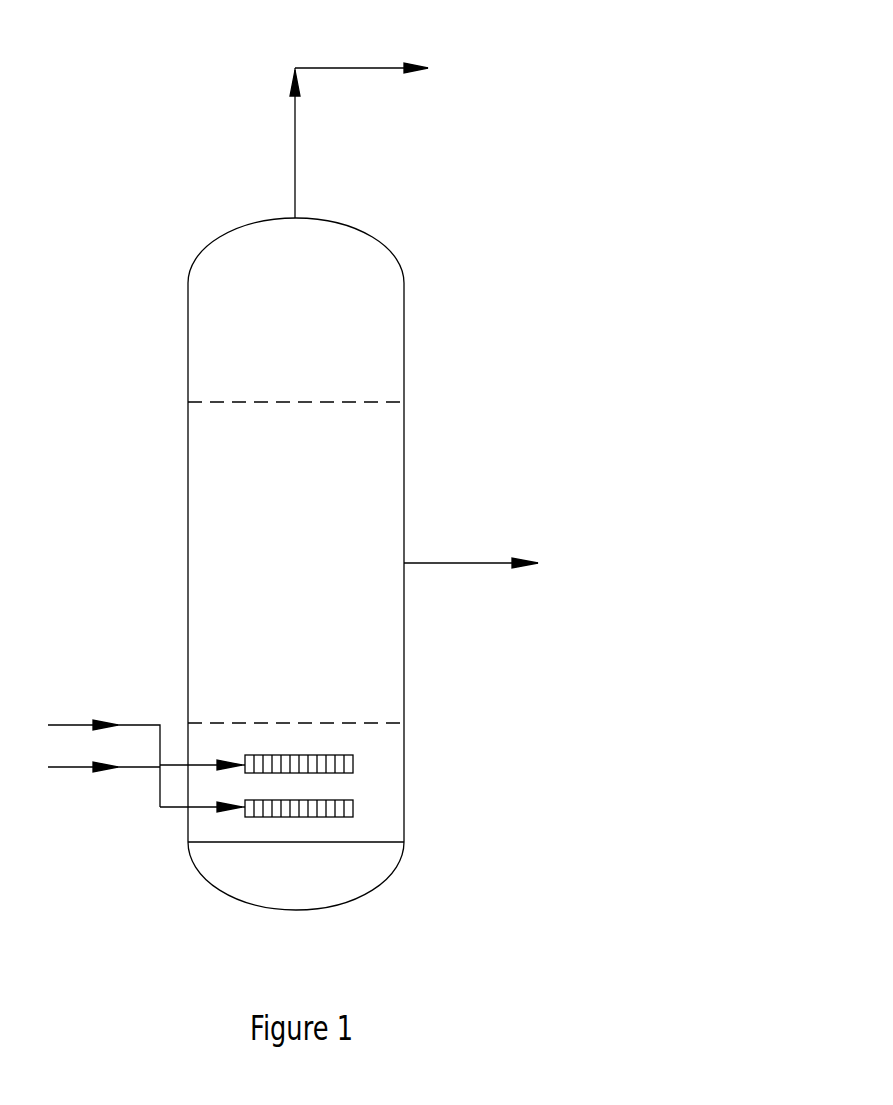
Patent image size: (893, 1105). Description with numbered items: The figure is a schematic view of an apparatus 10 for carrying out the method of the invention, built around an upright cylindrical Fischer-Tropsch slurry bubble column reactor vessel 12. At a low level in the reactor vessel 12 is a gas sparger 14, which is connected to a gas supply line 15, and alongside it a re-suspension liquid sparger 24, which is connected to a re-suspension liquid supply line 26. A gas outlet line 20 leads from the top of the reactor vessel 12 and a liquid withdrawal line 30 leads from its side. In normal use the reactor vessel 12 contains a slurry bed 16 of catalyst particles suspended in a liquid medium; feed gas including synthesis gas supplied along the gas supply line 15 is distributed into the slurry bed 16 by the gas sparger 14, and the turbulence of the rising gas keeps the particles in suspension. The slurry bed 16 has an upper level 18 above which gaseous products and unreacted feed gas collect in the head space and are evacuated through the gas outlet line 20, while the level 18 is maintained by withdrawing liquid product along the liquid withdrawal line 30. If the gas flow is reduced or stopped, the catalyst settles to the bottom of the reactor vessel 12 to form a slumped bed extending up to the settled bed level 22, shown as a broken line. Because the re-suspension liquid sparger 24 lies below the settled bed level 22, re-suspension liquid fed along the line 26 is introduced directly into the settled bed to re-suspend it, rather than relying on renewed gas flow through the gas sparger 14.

The apparatus 10 is at (497, 168).
The reactor vessel 12 is at (404, 296).
The gas sparger 14 is at (353, 808).
The gas supply line 15 is at (77, 768).
The slurry bed 16 is at (265, 469).
The upper level 18 is at (213, 402).
The gas outlet line 20 is at (343, 68).
The settled bed level 22 is at (367, 723).
The re-suspension liquid sparger 24 is at (353, 762).
The re-suspension liquid supply line 26 is at (77, 725).
The liquid withdrawal line 30 is at (462, 563).